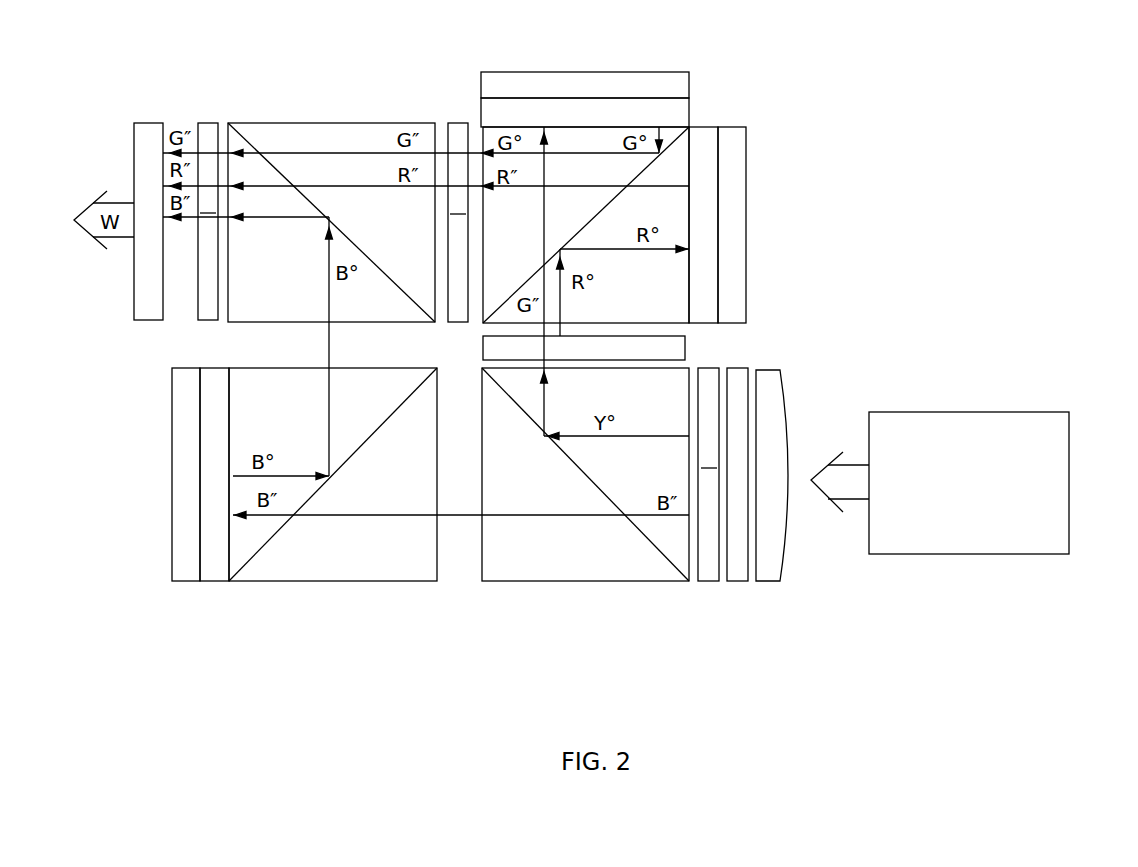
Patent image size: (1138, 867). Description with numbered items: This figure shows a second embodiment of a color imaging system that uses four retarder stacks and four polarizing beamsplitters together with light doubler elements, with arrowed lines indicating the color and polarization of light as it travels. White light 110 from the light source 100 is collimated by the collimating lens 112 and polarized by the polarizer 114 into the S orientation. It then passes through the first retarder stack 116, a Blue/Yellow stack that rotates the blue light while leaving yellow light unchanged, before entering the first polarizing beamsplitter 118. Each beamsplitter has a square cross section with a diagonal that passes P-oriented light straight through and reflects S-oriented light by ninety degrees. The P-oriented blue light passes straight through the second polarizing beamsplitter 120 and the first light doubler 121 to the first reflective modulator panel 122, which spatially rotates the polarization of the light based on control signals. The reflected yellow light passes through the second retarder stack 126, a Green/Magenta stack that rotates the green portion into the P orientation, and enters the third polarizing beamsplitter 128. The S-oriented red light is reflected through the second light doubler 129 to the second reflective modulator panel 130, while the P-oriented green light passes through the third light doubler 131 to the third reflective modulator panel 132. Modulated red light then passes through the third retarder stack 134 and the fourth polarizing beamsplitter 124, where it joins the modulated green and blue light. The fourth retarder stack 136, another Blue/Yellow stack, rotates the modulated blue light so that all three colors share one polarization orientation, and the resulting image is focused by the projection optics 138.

The light source 100 is at (965, 554).
The white light 110 is at (860, 500).
The collimating lens 112 is at (767, 583).
The polarizer 114 is at (737, 583).
The first retarder stack 116 is at (707, 583).
The first polarizing beamsplitter 118 is at (585, 583).
The second polarizing beamsplitter 120 is at (320, 581).
The first light doubler 121 is at (217, 583).
The first reflective modulator panel 122 is at (183, 583).
The fourth polarizing beamsplitter 124 is at (333, 120).
The second retarder stack 126 is at (685, 350).
The third polarizing beamsplitter 128 is at (673, 167).
The second light doubler 129 is at (708, 127).
The second reflective modulator panel 130 is at (747, 192).
The third light doubler 131 is at (692, 110).
The third reflective modulator panel 132 is at (596, 70).
The third retarder stack 134 is at (460, 120).
The fourth retarder stack 136 is at (207, 120).
The projection optics 138 is at (152, 120).